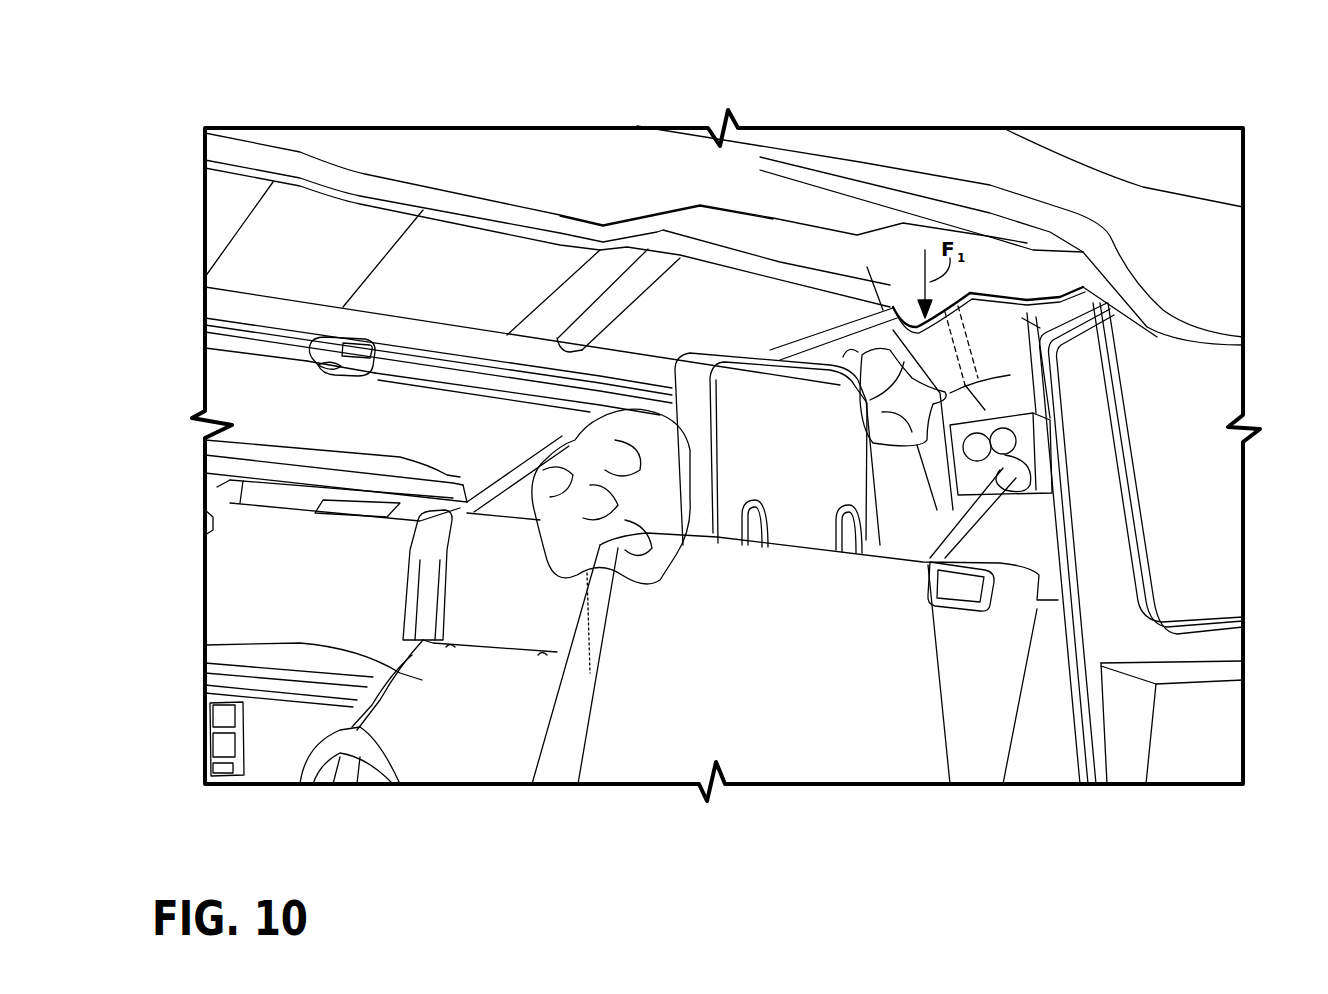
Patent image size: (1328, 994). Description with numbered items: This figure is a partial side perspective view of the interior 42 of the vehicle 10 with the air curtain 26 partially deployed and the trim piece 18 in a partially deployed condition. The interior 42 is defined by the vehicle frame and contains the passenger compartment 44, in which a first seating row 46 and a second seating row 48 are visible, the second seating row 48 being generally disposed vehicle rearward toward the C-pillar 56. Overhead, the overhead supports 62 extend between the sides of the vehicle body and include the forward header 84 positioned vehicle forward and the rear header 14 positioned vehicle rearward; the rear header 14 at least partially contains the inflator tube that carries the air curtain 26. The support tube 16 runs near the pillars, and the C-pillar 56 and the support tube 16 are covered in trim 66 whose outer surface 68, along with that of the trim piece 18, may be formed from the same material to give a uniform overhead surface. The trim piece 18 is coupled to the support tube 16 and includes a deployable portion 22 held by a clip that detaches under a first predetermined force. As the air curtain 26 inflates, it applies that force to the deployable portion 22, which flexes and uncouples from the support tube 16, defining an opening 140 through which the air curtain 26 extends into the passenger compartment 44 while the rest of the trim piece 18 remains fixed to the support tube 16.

The vehicle 10 is at (220, 101).
The rear header 14 is at (779, 150).
The support tube 16 is at (843, 357).
The trim piece 18 is at (1022, 318).
The deployable portion 22 is at (970, 293).
The air curtain 26 is at (603, 470).
The interior 42 is at (237, 302).
The passenger compartment 44 is at (262, 410).
The first seating row 46 is at (425, 682).
The second seating row 48 is at (637, 718).
The C-pillar 56 is at (1060, 445).
The overhead supports 62 is at (297, 327).
The trim 66 is at (553, 178).
The outer surface 68 is at (608, 204).
The forward header 84 is at (518, 353).
The opening 140 is at (867, 267).